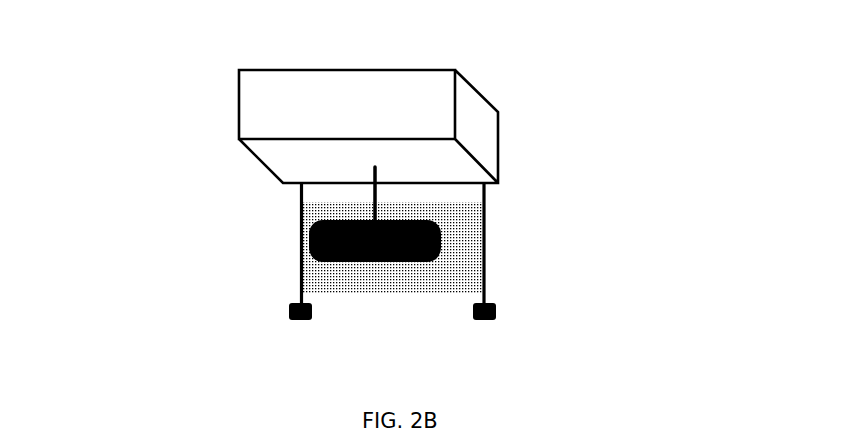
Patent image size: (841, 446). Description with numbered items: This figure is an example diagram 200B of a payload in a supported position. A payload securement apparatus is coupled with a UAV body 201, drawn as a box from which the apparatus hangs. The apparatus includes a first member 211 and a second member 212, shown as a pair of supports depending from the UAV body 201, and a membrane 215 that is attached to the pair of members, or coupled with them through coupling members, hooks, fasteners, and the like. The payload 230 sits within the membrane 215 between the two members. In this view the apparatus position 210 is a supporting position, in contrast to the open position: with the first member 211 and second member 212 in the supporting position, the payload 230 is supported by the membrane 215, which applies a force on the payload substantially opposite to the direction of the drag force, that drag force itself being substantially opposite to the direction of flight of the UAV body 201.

The example diagram 200B is at (597, 91).
The UAV body 201 is at (500, 143).
The open position 210 is at (271, 272).
The first member 211 is at (310, 252).
The second member 212 is at (486, 253).
The membrane 215 is at (375, 277).
The payload 230 is at (328, 220).